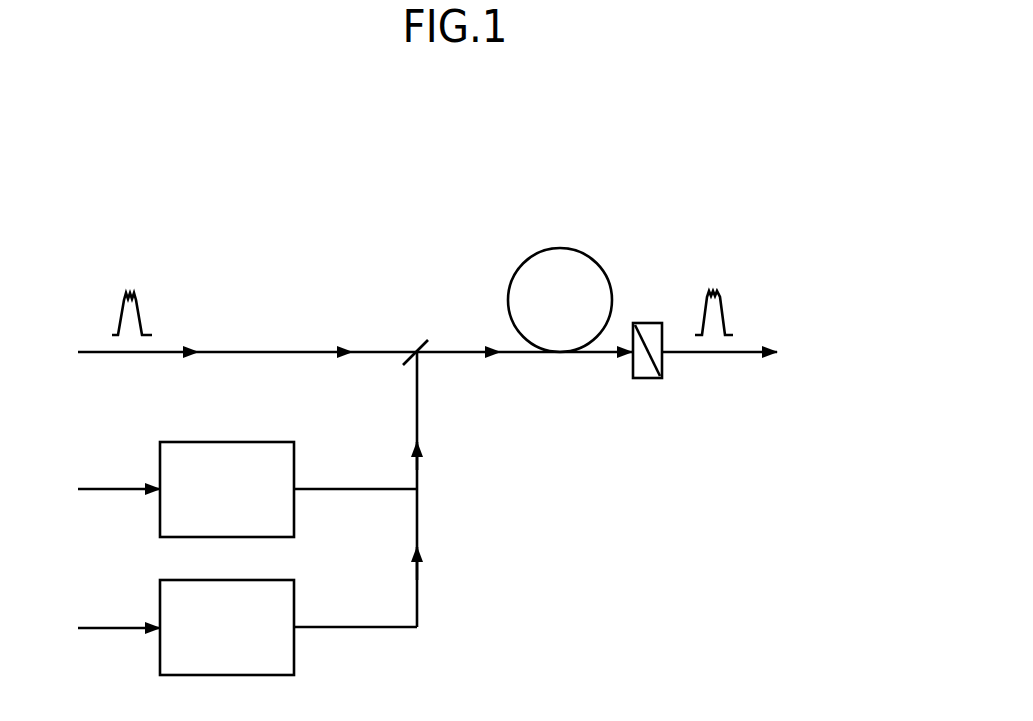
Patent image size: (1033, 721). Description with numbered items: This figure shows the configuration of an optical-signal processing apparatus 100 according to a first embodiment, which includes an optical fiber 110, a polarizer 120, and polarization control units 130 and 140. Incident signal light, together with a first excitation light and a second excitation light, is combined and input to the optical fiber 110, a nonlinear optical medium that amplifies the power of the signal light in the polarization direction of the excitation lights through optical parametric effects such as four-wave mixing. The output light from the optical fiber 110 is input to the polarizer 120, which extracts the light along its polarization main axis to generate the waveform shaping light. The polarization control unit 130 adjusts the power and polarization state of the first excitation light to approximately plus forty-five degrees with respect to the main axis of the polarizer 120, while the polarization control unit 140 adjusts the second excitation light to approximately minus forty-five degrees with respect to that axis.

The optical-signal processing apparatus 100 is at (724, 181).
The optical fiber 110 is at (560, 248).
The polarizer 120 is at (645, 380).
The polarization control unit 130 is at (258, 441).
The polarization control unit 140 is at (260, 579).